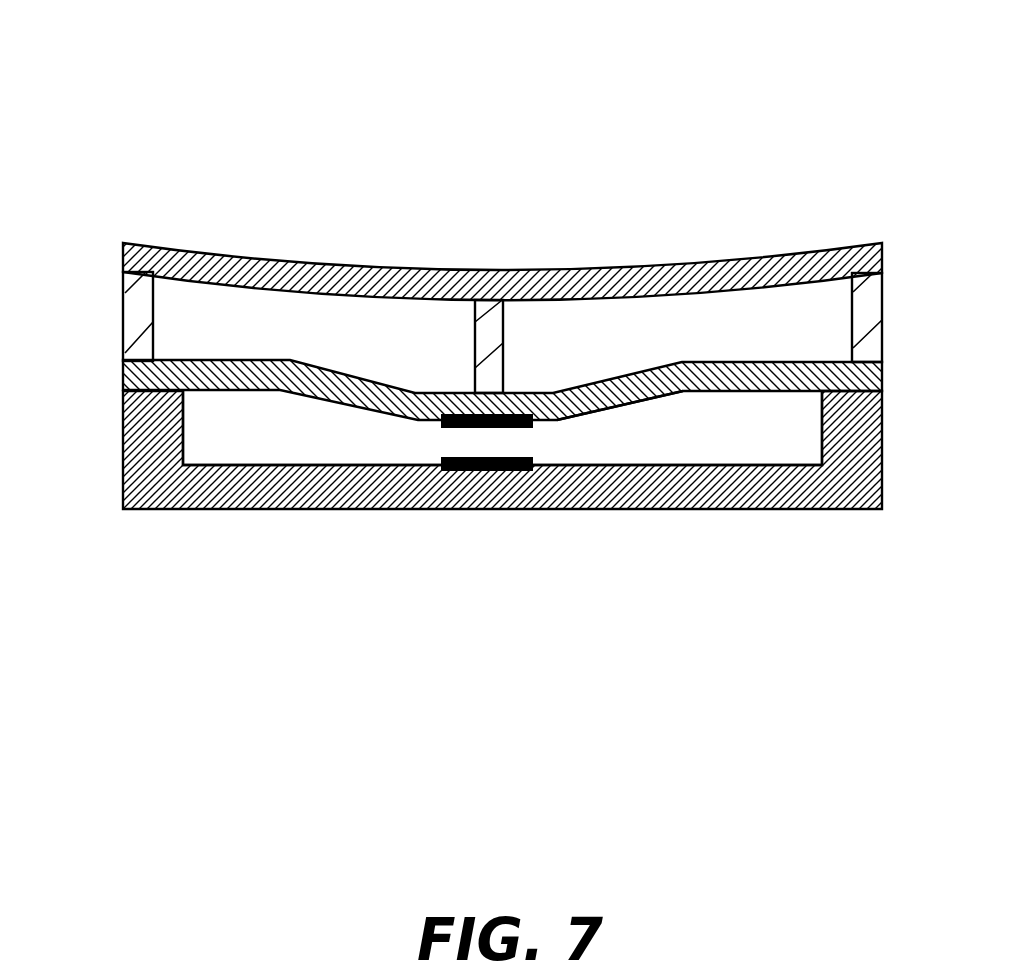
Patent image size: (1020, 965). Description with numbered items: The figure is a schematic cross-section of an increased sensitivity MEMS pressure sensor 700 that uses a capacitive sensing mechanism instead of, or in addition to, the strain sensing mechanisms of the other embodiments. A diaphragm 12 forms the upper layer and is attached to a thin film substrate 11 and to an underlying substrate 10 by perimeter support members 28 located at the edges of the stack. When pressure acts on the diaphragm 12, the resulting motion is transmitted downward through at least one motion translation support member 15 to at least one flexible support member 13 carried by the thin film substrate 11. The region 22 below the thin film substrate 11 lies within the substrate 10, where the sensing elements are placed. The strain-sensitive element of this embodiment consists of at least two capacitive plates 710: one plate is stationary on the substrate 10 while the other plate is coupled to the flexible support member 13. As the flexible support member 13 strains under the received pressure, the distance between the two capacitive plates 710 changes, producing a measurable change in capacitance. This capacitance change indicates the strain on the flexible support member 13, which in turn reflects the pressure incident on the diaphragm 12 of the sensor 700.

The increased sensitivity MEMS pressure sensor 700 is at (492, 102).
The diaphragm 12 is at (585, 270).
The perimeter support members 28 is at (123, 313).
The motion translation support member 15 is at (473, 345).
The thin film substrate 11 is at (882, 378).
The flexible support member 13 is at (625, 403).
The substrate 10 is at (123, 478).
The cavity 22 is at (257, 450).
The capacitive plates 710 is at (440, 427).